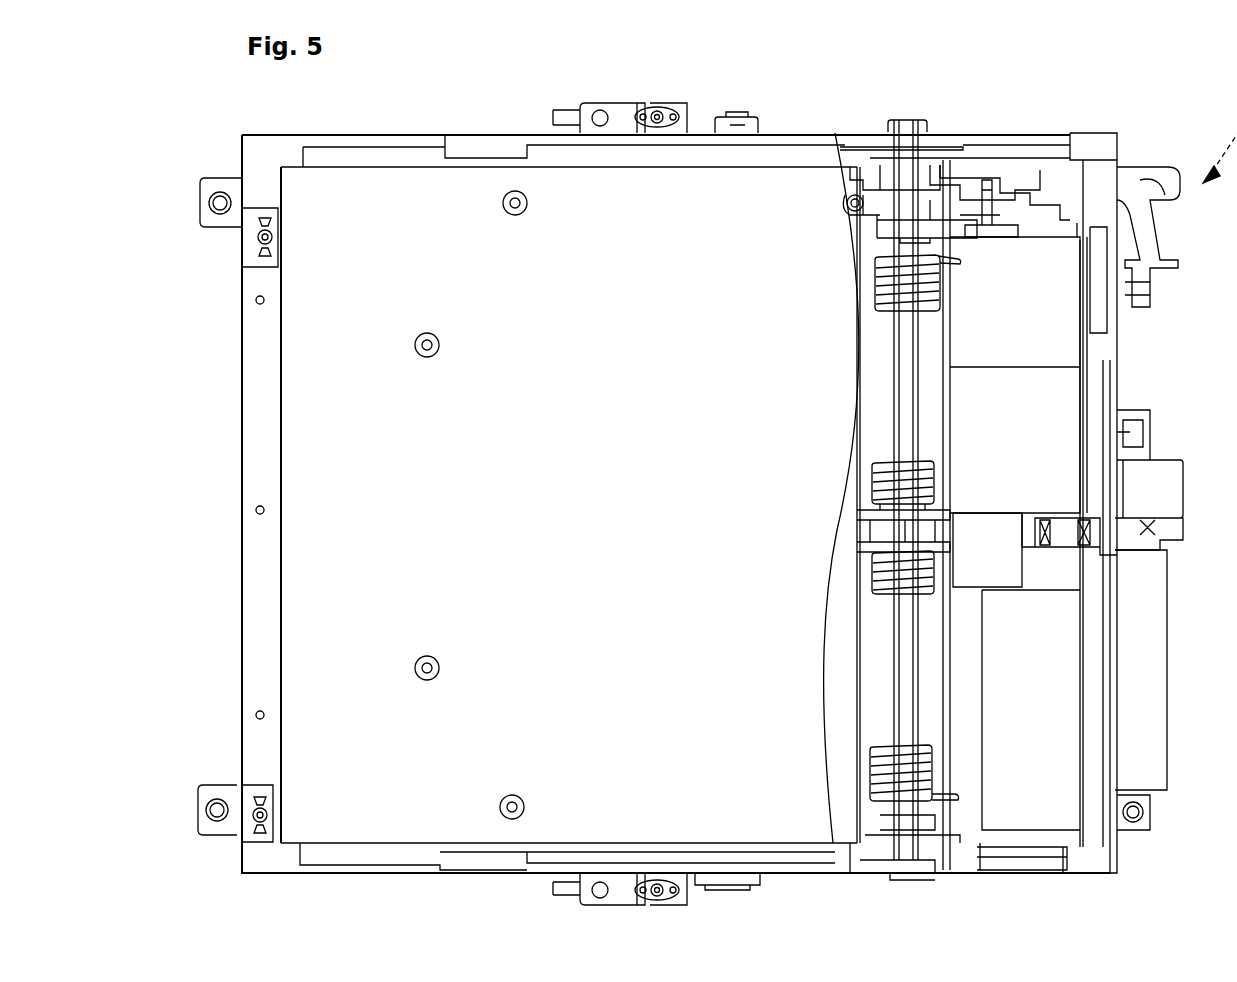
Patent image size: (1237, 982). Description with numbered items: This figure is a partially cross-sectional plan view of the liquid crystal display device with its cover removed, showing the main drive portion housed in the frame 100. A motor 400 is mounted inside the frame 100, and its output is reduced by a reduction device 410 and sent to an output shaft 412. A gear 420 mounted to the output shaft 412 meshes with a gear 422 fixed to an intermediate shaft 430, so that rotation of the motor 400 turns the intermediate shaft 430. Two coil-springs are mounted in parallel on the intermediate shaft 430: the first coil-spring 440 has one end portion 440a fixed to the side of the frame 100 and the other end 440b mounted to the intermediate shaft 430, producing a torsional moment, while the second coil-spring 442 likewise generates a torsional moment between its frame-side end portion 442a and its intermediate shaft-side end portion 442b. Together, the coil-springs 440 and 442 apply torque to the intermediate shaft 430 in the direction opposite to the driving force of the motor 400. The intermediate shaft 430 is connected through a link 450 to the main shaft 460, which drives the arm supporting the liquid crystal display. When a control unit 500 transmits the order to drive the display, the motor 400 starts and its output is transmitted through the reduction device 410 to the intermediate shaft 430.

The frame 100 is at (534, 456).
The motor 400 is at (993, 540).
The reduction device 410 is at (1067, 343).
The output shaft 412 is at (1000, 222).
The gear 420 is at (1003, 192).
The gear 422 is at (870, 215).
The intermediate shaft 430 is at (903, 378).
The first coil-spring 440 is at (880, 290).
The end portion 440a is at (945, 262).
The other end 440b is at (880, 503).
The second coil-spring 442 is at (875, 595).
The frame-side end portion 442a is at (940, 795).
The intermediate shaft-side end portion 442b is at (878, 560).
The link 450 is at (846, 203).
The main shaft 460 is at (723, 135).
The control unit 500 is at (1063, 673).